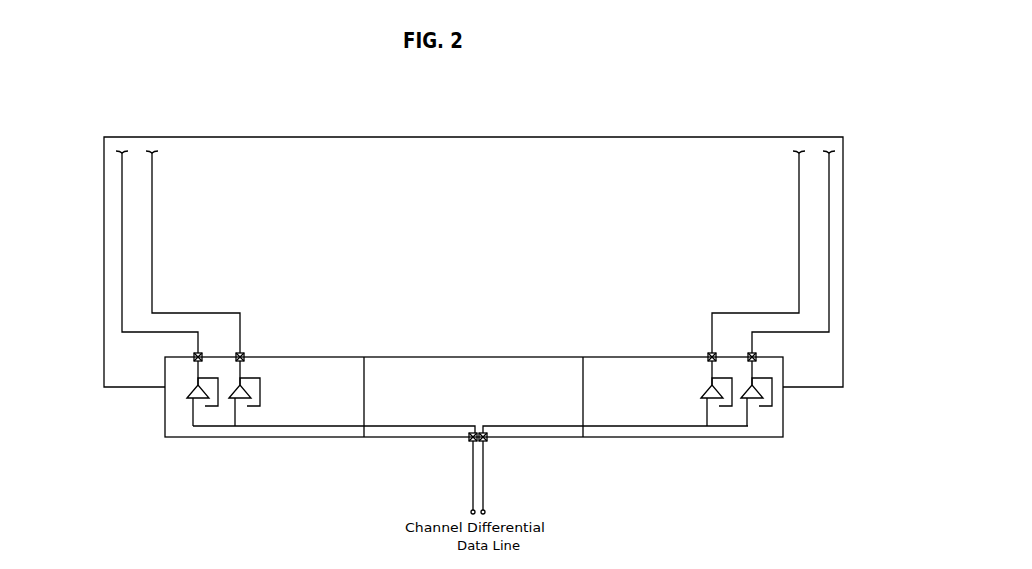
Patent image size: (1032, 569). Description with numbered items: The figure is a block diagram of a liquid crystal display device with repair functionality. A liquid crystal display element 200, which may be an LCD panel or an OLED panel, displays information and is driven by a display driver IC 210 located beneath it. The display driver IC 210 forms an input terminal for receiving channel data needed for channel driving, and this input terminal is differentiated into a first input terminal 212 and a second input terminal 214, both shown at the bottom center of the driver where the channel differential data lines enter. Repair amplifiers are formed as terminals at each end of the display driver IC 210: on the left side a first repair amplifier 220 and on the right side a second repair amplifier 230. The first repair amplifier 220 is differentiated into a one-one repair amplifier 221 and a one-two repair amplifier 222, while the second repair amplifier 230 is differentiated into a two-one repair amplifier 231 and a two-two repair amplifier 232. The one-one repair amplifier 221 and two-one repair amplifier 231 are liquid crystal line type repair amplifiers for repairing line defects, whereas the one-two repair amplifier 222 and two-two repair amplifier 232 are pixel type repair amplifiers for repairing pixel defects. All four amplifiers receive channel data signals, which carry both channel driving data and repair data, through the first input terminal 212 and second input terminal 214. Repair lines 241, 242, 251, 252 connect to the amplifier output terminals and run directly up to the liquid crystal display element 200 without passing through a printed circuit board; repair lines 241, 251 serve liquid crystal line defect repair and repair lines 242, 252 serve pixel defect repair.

The liquid crystal display element 200 is at (474, 148).
The display driver IC 210 is at (656, 437).
The first input terminal 212 is at (471, 442).
The second input terminal 214 is at (485, 442).
The first repair amplifier 220 is at (221, 452).
The 1-1 repair amplifier 221 is at (198, 398).
The 1-2 repair amplifier 222 is at (240, 398).
The second repair amplifier 230 is at (734, 452).
The 2-1 repair amplifier 231 is at (752, 398).
The 2-2 repair amplifier 232 is at (712, 398).
The repair line 241 is at (122, 182).
The repair line 242 is at (152, 215).
The repair line 251 is at (829, 182).
The repair line 252 is at (799, 215).